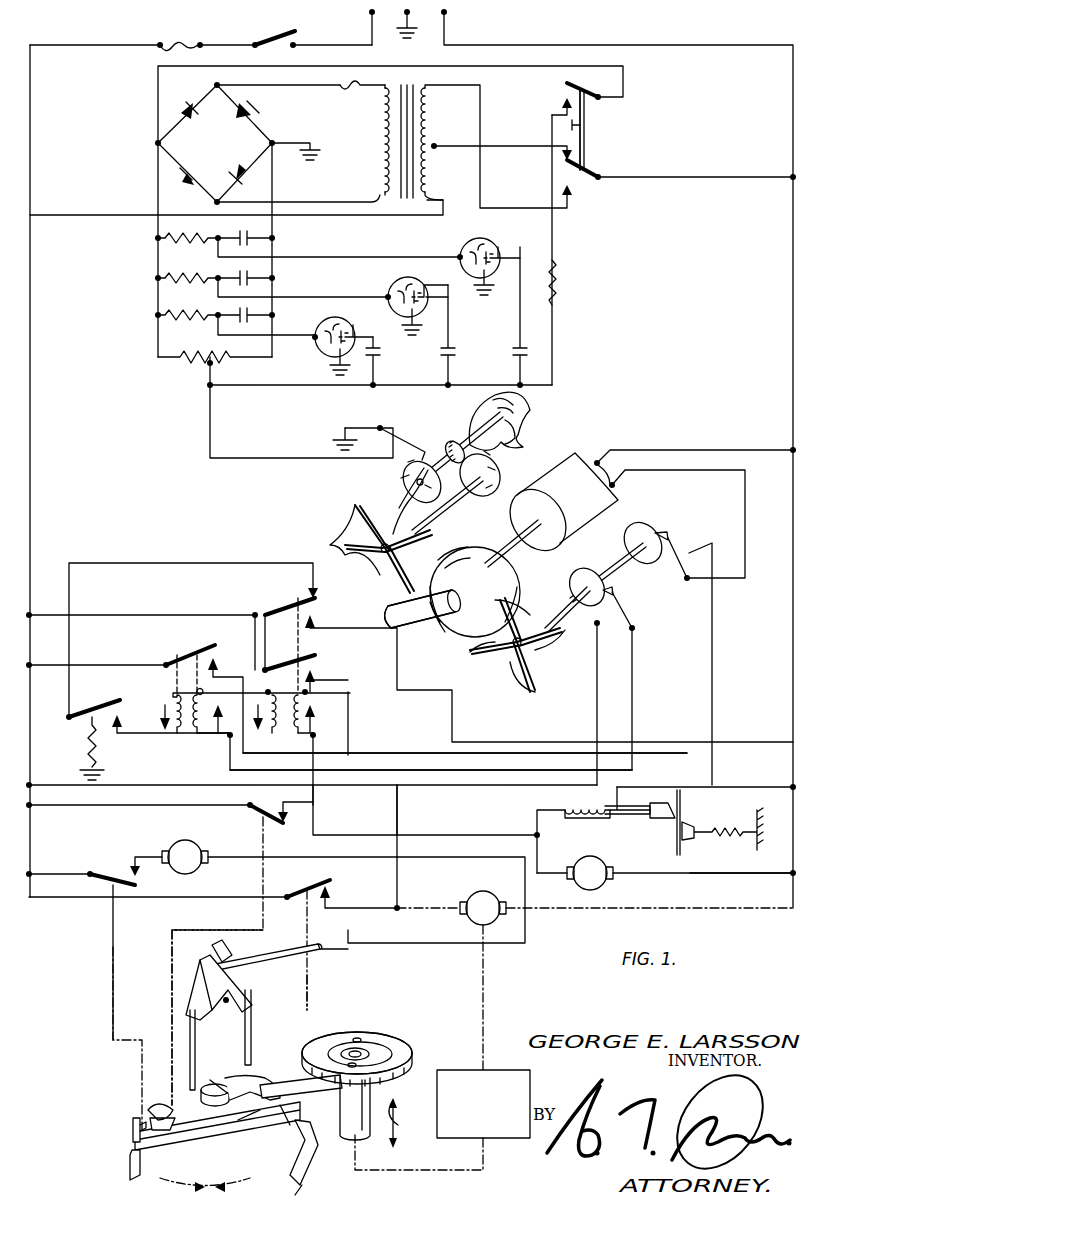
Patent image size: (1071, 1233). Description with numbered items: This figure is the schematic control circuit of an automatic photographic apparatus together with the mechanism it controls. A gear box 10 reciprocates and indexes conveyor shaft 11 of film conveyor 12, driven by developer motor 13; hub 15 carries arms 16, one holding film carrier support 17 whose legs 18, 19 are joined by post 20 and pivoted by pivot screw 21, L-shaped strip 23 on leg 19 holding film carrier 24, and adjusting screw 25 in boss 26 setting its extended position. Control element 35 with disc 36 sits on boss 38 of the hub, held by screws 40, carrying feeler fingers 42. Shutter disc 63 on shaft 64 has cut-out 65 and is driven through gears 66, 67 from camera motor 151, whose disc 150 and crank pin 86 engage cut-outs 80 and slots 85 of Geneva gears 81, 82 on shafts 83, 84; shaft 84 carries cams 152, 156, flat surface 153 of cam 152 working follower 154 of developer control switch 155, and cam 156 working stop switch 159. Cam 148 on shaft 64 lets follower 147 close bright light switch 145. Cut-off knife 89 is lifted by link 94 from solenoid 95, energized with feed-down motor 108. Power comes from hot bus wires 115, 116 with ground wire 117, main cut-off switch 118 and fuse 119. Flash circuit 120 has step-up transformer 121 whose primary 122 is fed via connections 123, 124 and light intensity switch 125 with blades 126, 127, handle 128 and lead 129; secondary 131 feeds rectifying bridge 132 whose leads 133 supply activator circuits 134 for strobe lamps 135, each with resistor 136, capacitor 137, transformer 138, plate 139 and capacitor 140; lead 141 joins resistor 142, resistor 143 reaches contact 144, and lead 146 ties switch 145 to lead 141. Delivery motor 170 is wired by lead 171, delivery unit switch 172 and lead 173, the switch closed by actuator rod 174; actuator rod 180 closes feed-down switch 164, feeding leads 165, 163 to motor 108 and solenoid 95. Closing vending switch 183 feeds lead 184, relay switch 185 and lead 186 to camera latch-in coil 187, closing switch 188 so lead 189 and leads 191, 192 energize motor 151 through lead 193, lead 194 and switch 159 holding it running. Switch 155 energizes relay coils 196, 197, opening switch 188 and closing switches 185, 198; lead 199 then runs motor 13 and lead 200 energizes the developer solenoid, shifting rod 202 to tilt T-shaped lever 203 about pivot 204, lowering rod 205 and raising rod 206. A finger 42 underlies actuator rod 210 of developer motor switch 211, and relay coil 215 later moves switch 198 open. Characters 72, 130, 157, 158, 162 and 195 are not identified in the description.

The indexing drive mechanism 10 is at (458, 1138).
The shaft 11 is at (372, 1097).
The index plate 12 is at (400, 1025).
The drive motor 13 is at (460, 916).
The plate motion arrow 15 is at (410, 1068).
The arm 16 is at (311, 1090).
The hub 17 is at (220, 1065).
The lever 18 is at (245, 1078).
The lever portion 19 is at (255, 1128).
The lever portion 20 is at (278, 1125).
The pivot pin 21 is at (212, 1080).
The stop 23 is at (300, 1135).
The motion arrow 24 is at (330, 1157).
The block 25 is at (135, 1133).
The clamp 26 is at (143, 1115).
The ring 35 is at (340, 1030).
The disc 36 is at (373, 1035).
The rim 38 is at (380, 1048).
The pins 40 is at (357, 1035).
The base rail 42 is at (245, 1125).
The pulley 63 is at (522, 412).
The shaft 64 is at (496, 418).
The pulley flange 65 is at (520, 436).
The gear 66 is at (460, 448).
The disc 67 is at (483, 495).
The contact 72 is at (680, 846).
The spider arms 80 is at (360, 537).
The arm 81 is at (395, 532).
The spider 82 is at (538, 650).
The shaft 83 is at (463, 500).
The shaft 84 is at (580, 612).
The disc 85 is at (365, 550).
The cylinder 86 is at (386, 608).
The armature 89 is at (665, 820).
The plunger 94 is at (630, 820).
The solenoid coil 95 is at (575, 806).
The motor 108 is at (606, 888).
The supply line 115 is at (32, 415).
The supply line 116 is at (793, 398).
The ground terminal 117 is at (408, 32).
The switch 118 is at (286, 30).
The fuse 119 is at (169, 40).
The power supply 120 is at (620, 287).
The transformer primary 121 is at (375, 130).
The transformer secondary 122 is at (430, 118).
The line 123 is at (63, 232).
The line 124 is at (663, 183).
The switch arm 125 is at (595, 130).
The switch 126 is at (571, 82).
The switch 127 is at (598, 168).
The contact 128 is at (585, 113).
The line 129 is at (540, 147).
The center tap line 130 is at (480, 175).
The resistor 131 is at (378, 168).
The rectifier bridge 132 is at (158, 141).
The line 133 is at (158, 190).
The capacitor 134 is at (262, 240).
The tube 135 is at (456, 250).
The resistor 136 is at (165, 278).
The line 137 is at (260, 265).
The ground 138 is at (500, 250).
The cathode 139 is at (470, 272).
The capacitor 140 is at (448, 350).
The line 141 is at (237, 392).
The resistor 142 is at (180, 365).
The resistor 143 is at (560, 263).
The contact 144 is at (560, 114).
The ground 145 is at (395, 448).
The line 146 is at (265, 458).
The brush 147 is at (420, 445).
The disc 148 is at (398, 482).
The shaft 150 is at (500, 548).
The drum 151 is at (574, 460).
The disc 152 is at (570, 585).
The shaft 153 is at (575, 563).
The brush 154 is at (615, 587).
The line 155 is at (624, 630).
The disc 156 is at (630, 524).
The contact 157 is at (665, 530).
The brush 158 is at (662, 531).
The line 159 is at (692, 542).
The line 162 is at (692, 880).
The line 163 is at (452, 835).
The switch 164 is at (292, 825).
The line 165 is at (107, 816).
The motor 170 is at (190, 838).
The line 171 is at (83, 868).
The switch 172 is at (140, 885).
The line 173 is at (423, 857).
The linkage 174 is at (113, 947).
The linkage 180 is at (135, 935).
The switch 183 is at (85, 725).
The line 184 is at (198, 609).
The switch 185 is at (290, 593).
The line 186 is at (212, 550).
The line 187 is at (163, 704).
The switch 188 is at (189, 651).
The line 189 is at (97, 659).
The line 191 is at (407, 752).
The line 192 is at (745, 500).
The line 193 is at (708, 448).
The line 194 is at (160, 780).
The line 195 is at (440, 778).
The relay coil 196 is at (205, 733).
The relay coil 197 is at (265, 732).
The switch 198 is at (306, 655).
The line 199 is at (397, 806).
The line 200 is at (366, 807).
The link 202 is at (283, 958).
The bracket 203 is at (205, 980).
The pin 204 is at (226, 1005).
The rod 205 is at (253, 1010).
The rod 206 is at (190, 1037).
The linkage 210 is at (305, 975).
The switch 211 is at (310, 882).
The line 215 is at (308, 703).